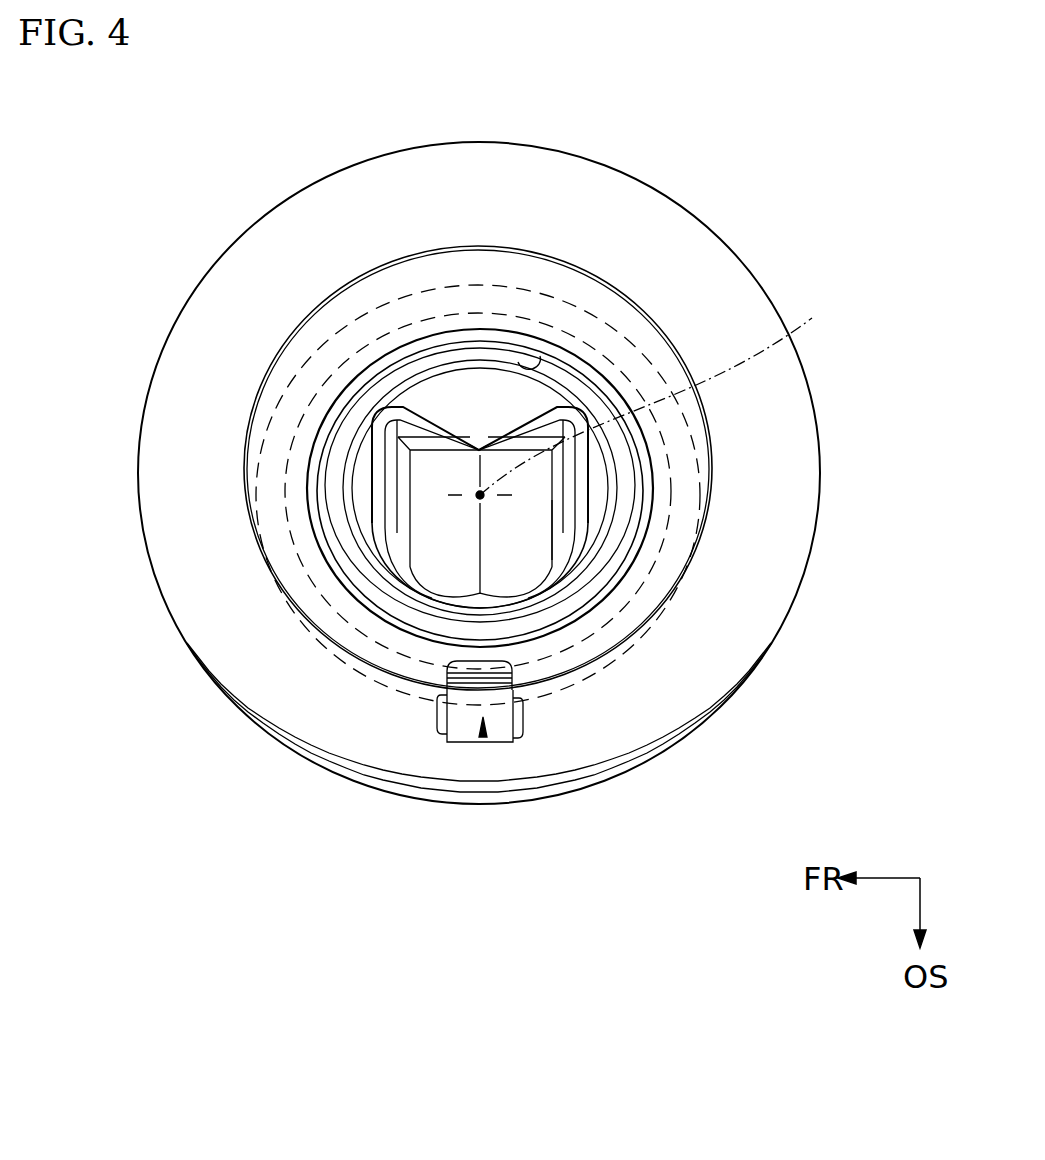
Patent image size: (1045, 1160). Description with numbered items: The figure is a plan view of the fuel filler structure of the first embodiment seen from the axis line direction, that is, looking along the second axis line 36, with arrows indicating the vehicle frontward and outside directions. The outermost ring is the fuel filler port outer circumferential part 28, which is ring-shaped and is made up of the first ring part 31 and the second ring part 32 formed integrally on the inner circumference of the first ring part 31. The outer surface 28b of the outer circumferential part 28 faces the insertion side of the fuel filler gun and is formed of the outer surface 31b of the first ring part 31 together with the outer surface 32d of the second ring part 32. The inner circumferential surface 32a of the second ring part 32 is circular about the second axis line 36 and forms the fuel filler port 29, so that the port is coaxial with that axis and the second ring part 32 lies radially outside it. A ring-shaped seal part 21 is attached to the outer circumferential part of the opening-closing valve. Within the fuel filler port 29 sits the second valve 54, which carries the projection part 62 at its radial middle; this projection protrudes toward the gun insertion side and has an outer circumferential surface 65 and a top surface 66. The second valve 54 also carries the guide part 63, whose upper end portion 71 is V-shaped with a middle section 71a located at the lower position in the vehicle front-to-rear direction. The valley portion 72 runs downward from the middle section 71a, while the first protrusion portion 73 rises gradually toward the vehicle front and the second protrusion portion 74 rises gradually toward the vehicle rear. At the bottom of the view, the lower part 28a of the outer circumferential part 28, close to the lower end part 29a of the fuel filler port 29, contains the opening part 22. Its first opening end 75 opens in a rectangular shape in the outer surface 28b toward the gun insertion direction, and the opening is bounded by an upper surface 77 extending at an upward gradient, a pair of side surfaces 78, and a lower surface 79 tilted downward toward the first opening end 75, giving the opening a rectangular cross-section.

The seal part 21 is at (435, 464).
The opening part 22 is at (483, 738).
The fuel filler port outer circumferential part 28 is at (435, 473).
The lower part 28a is at (512, 688).
The outer surface 28b is at (728, 609).
The fuel filler port 29 is at (606, 238).
The lower end part 29a is at (475, 645).
The first ring part 31 is at (195, 355).
The outer surface 31b is at (643, 234).
The second ring part 32 is at (262, 426).
The inner circumferential surface 32a is at (540, 356).
The outer surface 32d is at (627, 316).
The second axis line 36 is at (654, 392).
The second valve 54 is at (617, 447).
The projection part 62 is at (623, 488).
The guide part 63 is at (542, 517).
The outer circumferential surface 65 is at (617, 518).
The top surface 66 is at (603, 490).
The upper end portion 71 is at (438, 418).
The middle section 71a is at (480, 448).
The valley portion 72 is at (443, 637).
The first protrusion portion 73 is at (486, 408).
The second protrusion portion 74 is at (540, 517).
The first opening end 75 is at (481, 774).
The upper surface 77 is at (507, 663).
The pair of side surfaces 78 is at (442, 717).
The lower surface 79 is at (500, 725).